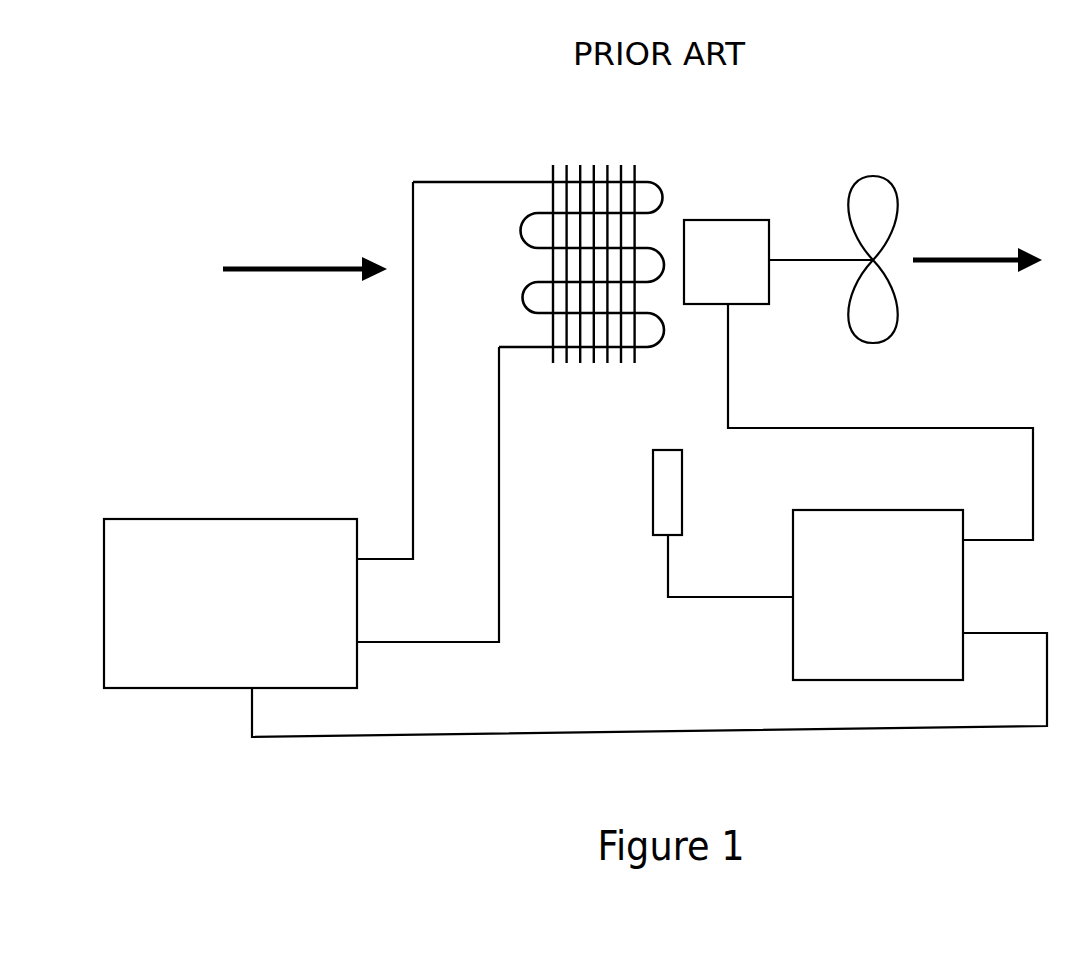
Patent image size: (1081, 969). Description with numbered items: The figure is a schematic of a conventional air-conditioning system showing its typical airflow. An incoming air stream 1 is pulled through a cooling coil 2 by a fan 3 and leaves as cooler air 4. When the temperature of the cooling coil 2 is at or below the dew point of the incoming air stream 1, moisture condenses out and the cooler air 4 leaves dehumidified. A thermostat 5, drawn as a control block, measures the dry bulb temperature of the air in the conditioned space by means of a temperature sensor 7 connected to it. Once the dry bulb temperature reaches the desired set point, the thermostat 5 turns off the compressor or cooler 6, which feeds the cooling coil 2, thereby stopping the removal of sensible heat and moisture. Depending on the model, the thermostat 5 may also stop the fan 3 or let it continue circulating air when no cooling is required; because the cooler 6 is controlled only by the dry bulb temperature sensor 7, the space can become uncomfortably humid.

The incoming air stream 1 is at (305, 249).
The cooling coil 2 is at (538, 229).
The fan 3 is at (791, 255).
The cooler air 4 is at (977, 231).
The thermostat 5 is at (878, 569).
The cooler 6 is at (230, 582).
The temperature sensor 7 is at (704, 509).